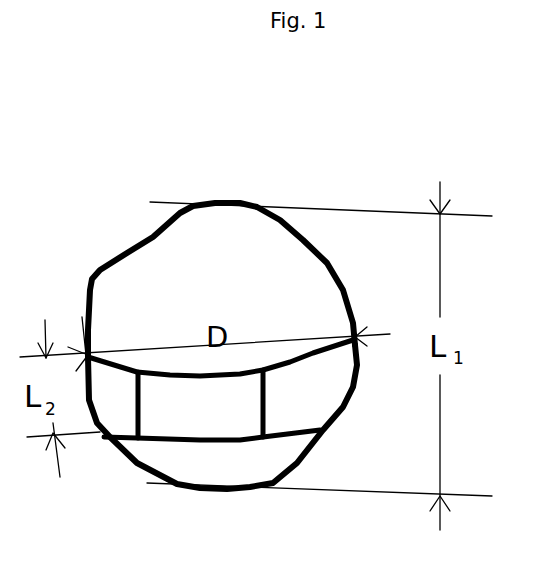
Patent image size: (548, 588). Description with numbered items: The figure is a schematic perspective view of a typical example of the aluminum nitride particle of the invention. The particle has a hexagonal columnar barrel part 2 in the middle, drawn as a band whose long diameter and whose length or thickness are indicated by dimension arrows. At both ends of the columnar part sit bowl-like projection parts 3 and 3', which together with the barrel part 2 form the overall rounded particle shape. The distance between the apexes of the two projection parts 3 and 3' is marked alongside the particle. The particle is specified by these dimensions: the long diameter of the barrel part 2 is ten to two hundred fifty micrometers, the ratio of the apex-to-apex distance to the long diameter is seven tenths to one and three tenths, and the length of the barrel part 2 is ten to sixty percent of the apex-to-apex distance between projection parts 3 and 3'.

The hexagonal columnar barrel part 2 is at (188, 418).
The bowl-like projection part 3 is at (221, 222).
The bowl-like projection part 3' is at (222, 463).